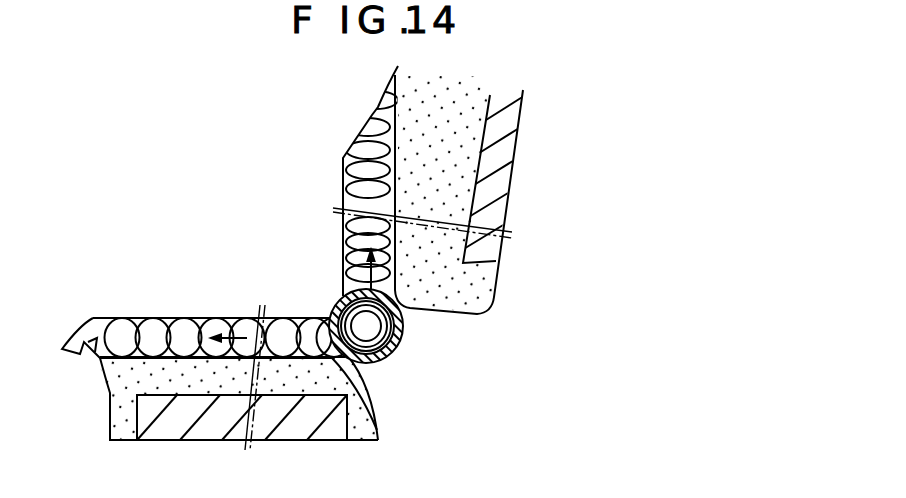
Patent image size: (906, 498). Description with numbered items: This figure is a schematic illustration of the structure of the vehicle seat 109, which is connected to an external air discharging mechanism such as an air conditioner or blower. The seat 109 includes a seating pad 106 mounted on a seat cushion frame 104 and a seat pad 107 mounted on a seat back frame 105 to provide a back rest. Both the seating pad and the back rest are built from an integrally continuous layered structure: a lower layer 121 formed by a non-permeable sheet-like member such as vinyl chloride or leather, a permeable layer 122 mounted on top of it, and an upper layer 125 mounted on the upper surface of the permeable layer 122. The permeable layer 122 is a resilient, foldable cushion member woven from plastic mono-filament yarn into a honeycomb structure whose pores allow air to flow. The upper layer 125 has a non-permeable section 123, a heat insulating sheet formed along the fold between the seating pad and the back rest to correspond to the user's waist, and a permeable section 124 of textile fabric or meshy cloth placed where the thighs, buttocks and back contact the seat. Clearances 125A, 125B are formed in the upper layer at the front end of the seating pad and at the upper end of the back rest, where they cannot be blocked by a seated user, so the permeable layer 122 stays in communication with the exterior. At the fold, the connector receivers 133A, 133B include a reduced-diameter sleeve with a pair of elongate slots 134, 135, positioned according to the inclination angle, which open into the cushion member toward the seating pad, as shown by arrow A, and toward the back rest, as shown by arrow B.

The seat cushion frame 104 is at (329, 418).
The seat back frame 105 is at (500, 191).
The seating pad 106 is at (352, 376).
The seat pad 107 is at (468, 290).
The seat 109 is at (533, 108).
The lower layer 121 is at (155, 358).
The permeable layer 122 is at (283, 318).
The non-permeable section 123 is at (343, 281).
The permeable section 124 is at (193, 318).
The upper layer 125 is at (119, 317).
The clearance 125A is at (83, 356).
The clearance 125B is at (373, 110).
The connector receiver 133A is at (403, 353).
The connector receiver 133B is at (403, 353).
The elongate slot 134 is at (378, 428).
The elongate slot 135 is at (408, 338).
The arrow A is at (232, 318).
The arrow B is at (410, 306).